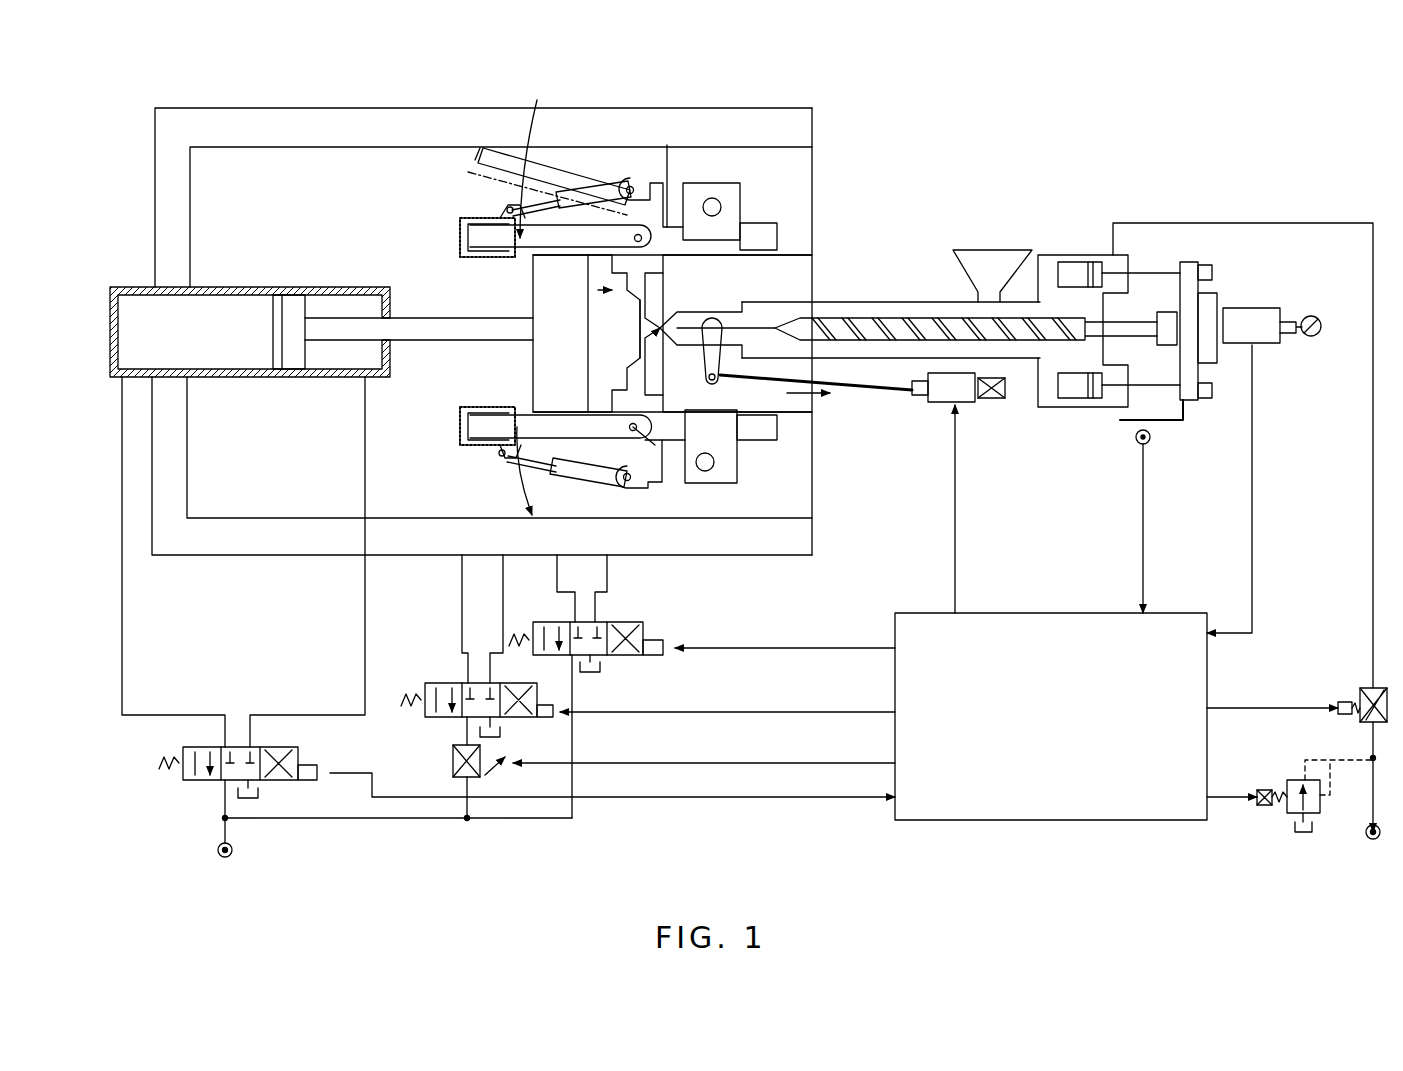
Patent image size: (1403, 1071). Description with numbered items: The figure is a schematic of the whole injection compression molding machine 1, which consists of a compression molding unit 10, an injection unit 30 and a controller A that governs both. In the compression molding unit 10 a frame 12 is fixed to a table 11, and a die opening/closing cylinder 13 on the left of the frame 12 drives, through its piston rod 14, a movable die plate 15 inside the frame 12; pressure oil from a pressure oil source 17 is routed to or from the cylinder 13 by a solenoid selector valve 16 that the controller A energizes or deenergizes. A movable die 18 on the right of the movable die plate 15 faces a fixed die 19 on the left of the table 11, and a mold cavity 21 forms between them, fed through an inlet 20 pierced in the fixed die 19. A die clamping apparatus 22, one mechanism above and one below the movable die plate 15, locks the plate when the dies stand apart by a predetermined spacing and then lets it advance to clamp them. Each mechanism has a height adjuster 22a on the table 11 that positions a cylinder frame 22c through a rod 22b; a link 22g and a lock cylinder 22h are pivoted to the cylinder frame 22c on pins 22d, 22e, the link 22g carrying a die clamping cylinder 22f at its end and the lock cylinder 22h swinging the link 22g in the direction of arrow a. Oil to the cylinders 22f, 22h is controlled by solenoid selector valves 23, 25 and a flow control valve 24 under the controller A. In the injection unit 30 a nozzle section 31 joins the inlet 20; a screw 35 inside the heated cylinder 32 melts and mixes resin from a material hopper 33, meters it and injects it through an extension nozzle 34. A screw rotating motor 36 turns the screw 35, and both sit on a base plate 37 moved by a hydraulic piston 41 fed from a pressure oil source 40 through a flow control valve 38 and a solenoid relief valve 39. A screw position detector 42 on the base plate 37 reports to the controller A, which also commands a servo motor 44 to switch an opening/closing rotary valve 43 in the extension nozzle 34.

The injection compression molding machine 1 is at (1138, 150).
The compression molding unit 10 is at (690, 108).
The table 11 is at (793, 207).
The frame 12 is at (165, 200).
The die opening/closing cylinder 13 is at (265, 290).
The piston rod 14 is at (410, 330).
The movable die plate 15 is at (540, 287).
The solenoid selector valve 16 is at (197, 780).
The pressure oil source 17 is at (216, 850).
The movable die 18 is at (610, 322).
The fixed die 19 is at (668, 325).
The inlet 20 is at (670, 317).
The mold cavity 21 is at (628, 380).
The die clamping apparatus 22 is at (462, 182).
The height adjuster 22a is at (733, 190).
The rod 22b is at (775, 238).
The cylinder frame 22c is at (645, 213).
The pin 22d is at (675, 238).
The pin 22e is at (640, 200).
The die clamping cylinder 22f is at (460, 237).
The link 22g is at (540, 262).
The lock cylinder 22h is at (588, 215).
The solenoid selector valve 23 is at (440, 718).
The flow control valve 24 is at (450, 772).
The solenoid selector valve 25 is at (620, 655).
The injection unit 30 is at (1068, 222).
The nozzle section 31 is at (640, 380).
The cylinder 32 is at (880, 302).
The material hopper 33 is at (1005, 250).
The extension nozzle 34 is at (748, 320).
The screw 35 is at (918, 318).
The screw rotating motor 36 is at (1250, 300).
The base plate 37 is at (1192, 262).
The flow control valve 38 is at (1362, 688).
The solenoid relief valve 39 is at (1288, 813).
The pressure oil source 40 is at (1368, 839).
The hydraulic piston 41 is at (1047, 407).
The screw position detector 42 is at (1138, 443).
The opening/closing rotary valve 43 is at (815, 375).
The servo motor 44 is at (960, 402).
The controller A is at (1035, 820).
The arrow a is at (502, 487).